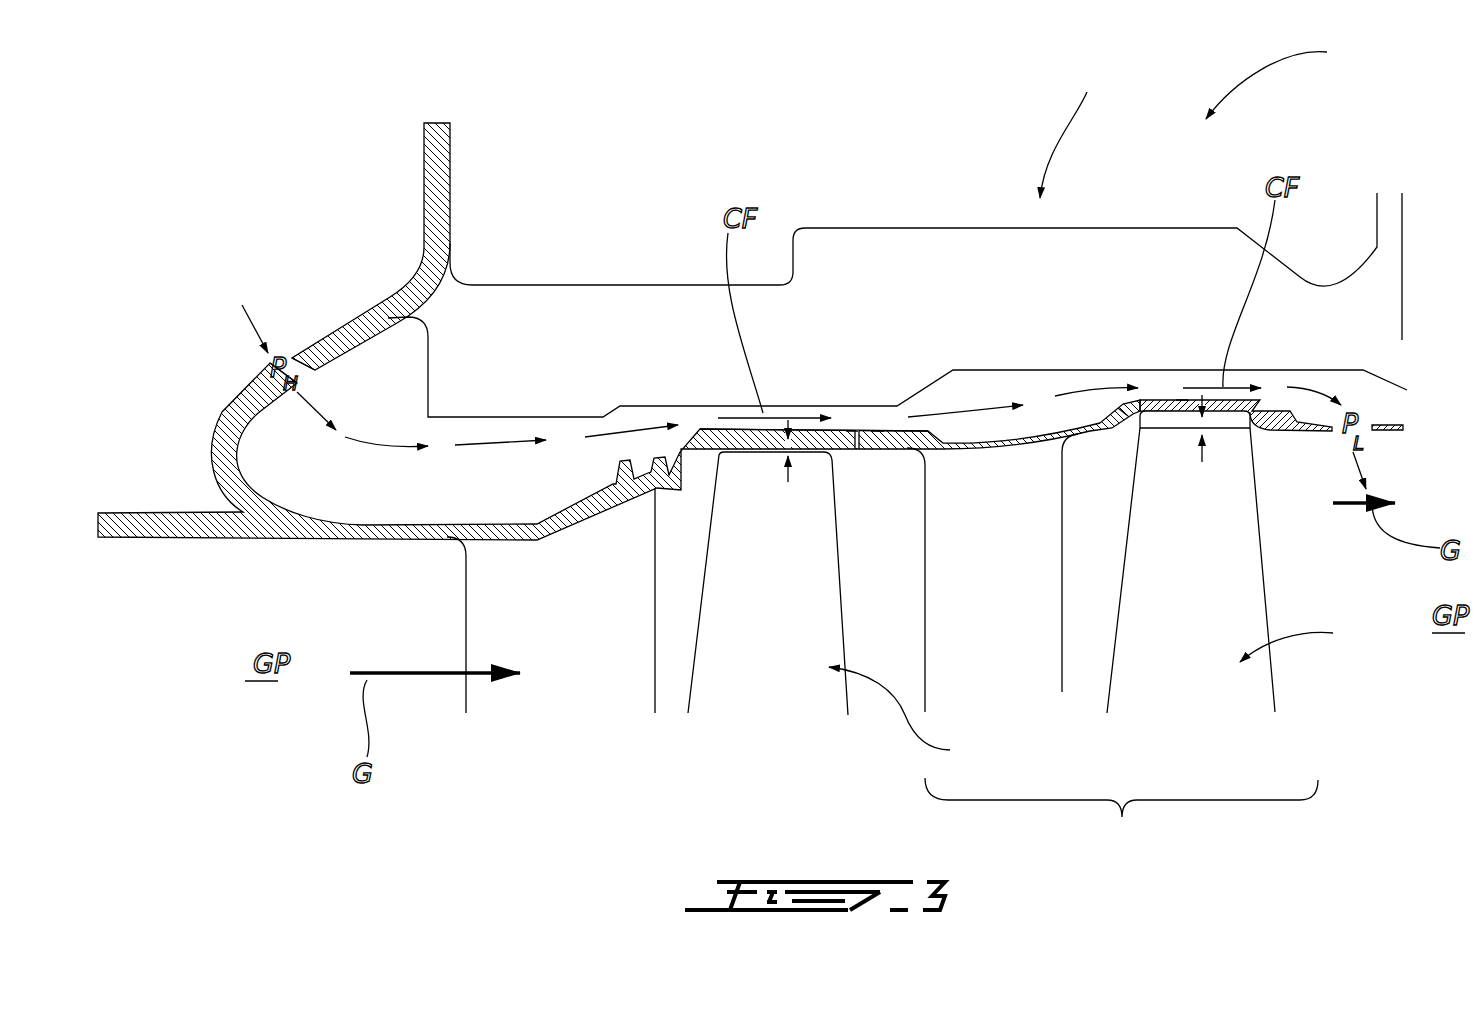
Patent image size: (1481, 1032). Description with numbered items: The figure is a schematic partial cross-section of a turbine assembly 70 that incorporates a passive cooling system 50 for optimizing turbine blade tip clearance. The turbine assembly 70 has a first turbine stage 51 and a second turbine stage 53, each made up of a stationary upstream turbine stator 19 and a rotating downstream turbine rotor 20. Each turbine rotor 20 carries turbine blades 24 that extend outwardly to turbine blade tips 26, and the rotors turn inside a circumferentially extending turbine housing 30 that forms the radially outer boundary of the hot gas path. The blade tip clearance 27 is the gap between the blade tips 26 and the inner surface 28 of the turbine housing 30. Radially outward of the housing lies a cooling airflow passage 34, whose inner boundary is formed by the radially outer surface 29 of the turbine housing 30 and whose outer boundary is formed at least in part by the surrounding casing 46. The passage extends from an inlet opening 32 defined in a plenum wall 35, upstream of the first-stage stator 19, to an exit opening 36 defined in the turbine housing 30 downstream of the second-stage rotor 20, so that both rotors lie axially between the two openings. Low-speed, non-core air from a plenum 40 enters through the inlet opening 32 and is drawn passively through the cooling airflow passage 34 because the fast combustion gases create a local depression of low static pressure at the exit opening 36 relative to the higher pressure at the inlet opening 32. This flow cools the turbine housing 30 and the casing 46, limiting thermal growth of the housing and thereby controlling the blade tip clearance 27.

The turbine stator 19 is at (577, 617).
The turbine rotor 20 is at (1099, 694).
The turbine blades 24 is at (793, 599).
The turbine blade tips 26 is at (770, 457).
The blade tip clearance 27 is at (789, 480).
The inner surface 28 is at (856, 450).
The radially outer surface 29 is at (852, 431).
The turbine housing 30 is at (878, 430).
The inlet opening 32 is at (303, 356).
The cooling airflow passage 34 is at (483, 497).
The plenum wall 35 is at (372, 313).
The exit opening 36 is at (1372, 426).
The plenum 40 is at (195, 311).
The casing 46 is at (633, 342).
The passive cooling system 50 is at (1077, 129).
The first turbine stage 51 is at (865, 750).
The second turbine stage 53 is at (1121, 817).
The turbine assembly 70 is at (1285, 78).